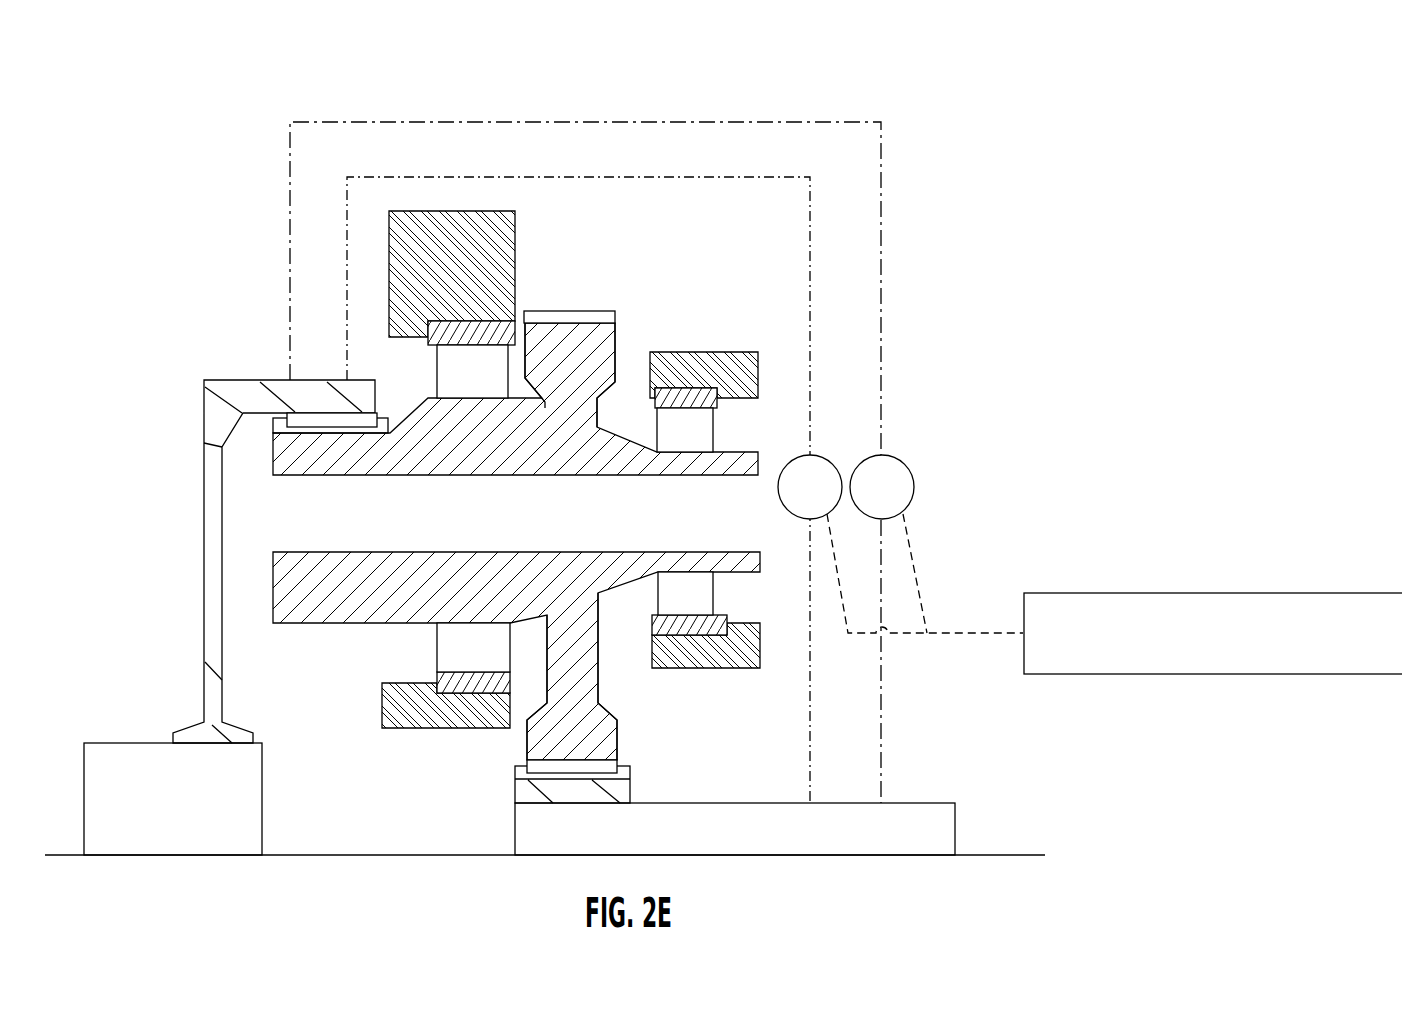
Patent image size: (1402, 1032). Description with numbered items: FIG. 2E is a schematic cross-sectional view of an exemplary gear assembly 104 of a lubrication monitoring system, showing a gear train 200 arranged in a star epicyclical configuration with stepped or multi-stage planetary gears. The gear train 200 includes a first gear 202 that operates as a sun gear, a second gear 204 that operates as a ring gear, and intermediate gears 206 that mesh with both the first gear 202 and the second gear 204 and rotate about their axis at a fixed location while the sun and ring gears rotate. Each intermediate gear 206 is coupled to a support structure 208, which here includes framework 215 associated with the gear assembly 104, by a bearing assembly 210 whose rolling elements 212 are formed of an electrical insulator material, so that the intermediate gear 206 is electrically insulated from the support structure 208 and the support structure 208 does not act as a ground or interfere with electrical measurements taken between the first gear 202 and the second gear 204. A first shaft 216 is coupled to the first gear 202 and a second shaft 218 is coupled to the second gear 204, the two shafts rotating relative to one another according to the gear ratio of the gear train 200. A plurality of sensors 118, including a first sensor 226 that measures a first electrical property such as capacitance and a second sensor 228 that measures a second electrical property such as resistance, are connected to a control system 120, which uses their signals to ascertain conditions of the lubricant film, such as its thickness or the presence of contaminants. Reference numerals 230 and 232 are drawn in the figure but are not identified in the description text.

The gear assembly 104 is at (918, 76).
The sensors 118 is at (968, 390).
The control system 120 is at (1147, 593).
The gear train 200 is at (690, 268).
The first gear 202 is at (632, 792).
The second gear 204 is at (246, 380).
The intermediate gear 206 is at (493, 447).
The support structure 208 is at (560, 483).
The bearing assembly 210 is at (495, 319).
The rolling elements 212 is at (487, 386).
The framework 215 is at (470, 281).
The first shaft 216 is at (720, 802).
The second shaft 218 is at (140, 743).
The first sensor 226 is at (820, 455).
The second sensor 228 is at (913, 480).
The shaft 230 is at (617, 342).
The rotor gap 232 is at (318, 452).